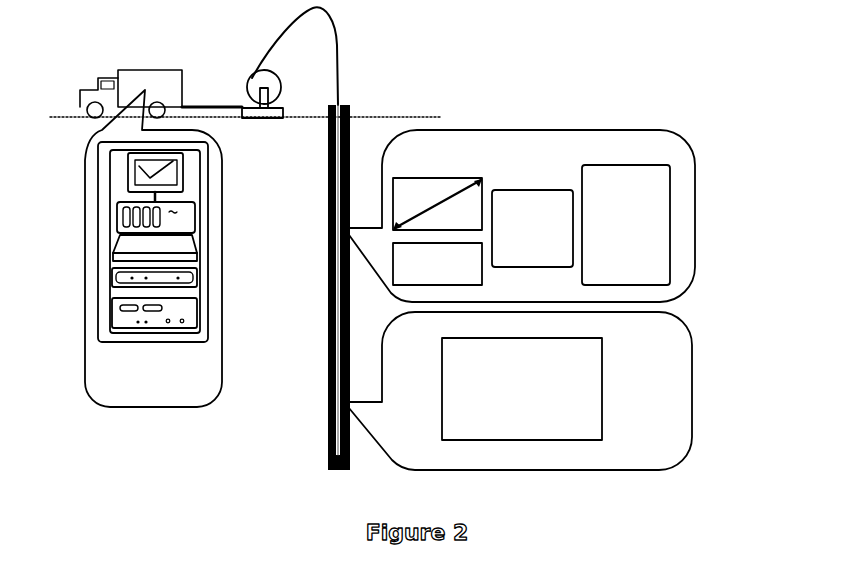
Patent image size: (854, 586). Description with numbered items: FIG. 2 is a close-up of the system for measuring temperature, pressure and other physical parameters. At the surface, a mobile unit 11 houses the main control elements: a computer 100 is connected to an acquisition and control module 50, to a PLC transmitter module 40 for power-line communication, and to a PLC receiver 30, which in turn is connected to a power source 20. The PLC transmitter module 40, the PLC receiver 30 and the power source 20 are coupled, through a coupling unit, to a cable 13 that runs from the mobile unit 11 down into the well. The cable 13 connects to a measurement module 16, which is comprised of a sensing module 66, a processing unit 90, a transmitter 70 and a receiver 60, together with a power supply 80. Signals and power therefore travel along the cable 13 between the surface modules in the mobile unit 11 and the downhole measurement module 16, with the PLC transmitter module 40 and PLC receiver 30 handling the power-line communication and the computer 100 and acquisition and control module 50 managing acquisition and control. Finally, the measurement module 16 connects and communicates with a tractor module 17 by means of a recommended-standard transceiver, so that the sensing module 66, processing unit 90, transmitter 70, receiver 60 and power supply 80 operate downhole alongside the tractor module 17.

The mobile unit 11 is at (153, 248).
The cable 13 is at (343, 61).
The measurement module 16 is at (519, 216).
The tractor module 17 is at (518, 391).
The power source 20 is at (122, 317).
The PLC receiver 30 is at (112, 250).
The PLC transmitter module 40 is at (196, 283).
The acquisition and control module 50 is at (180, 218).
The receiver 60 is at (437, 204).
The sensing module 66 is at (626, 225).
The transmitter 70 is at (437, 204).
The power supply 80 is at (437, 264).
The processing unit 90 is at (532, 228).
The computer 100 is at (140, 183).